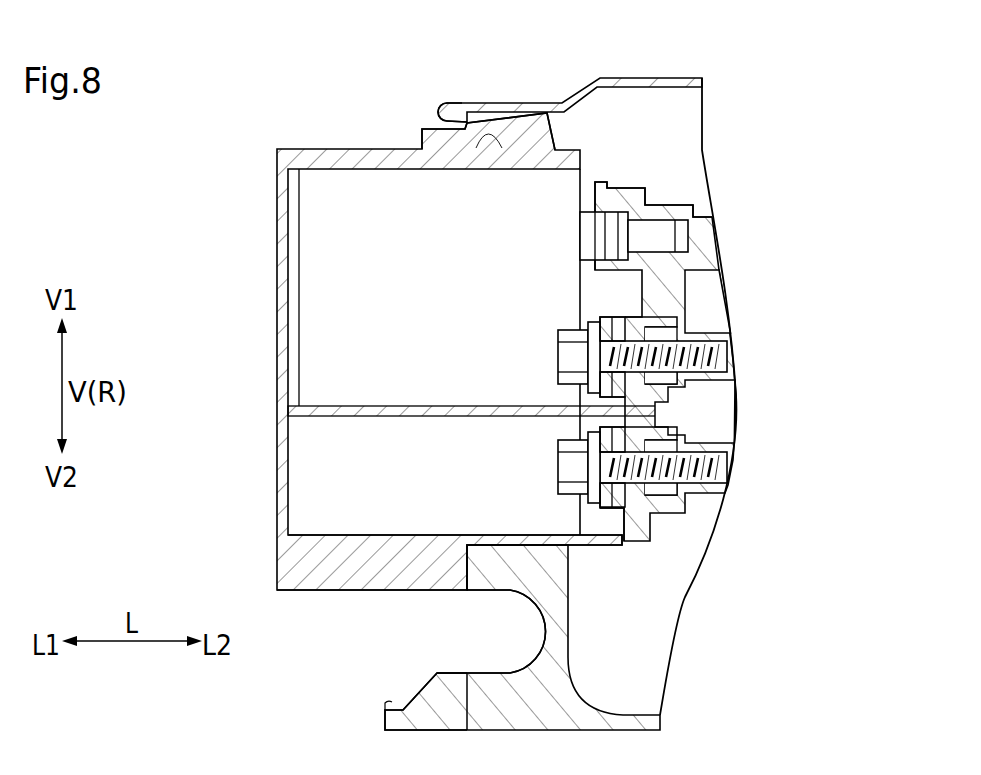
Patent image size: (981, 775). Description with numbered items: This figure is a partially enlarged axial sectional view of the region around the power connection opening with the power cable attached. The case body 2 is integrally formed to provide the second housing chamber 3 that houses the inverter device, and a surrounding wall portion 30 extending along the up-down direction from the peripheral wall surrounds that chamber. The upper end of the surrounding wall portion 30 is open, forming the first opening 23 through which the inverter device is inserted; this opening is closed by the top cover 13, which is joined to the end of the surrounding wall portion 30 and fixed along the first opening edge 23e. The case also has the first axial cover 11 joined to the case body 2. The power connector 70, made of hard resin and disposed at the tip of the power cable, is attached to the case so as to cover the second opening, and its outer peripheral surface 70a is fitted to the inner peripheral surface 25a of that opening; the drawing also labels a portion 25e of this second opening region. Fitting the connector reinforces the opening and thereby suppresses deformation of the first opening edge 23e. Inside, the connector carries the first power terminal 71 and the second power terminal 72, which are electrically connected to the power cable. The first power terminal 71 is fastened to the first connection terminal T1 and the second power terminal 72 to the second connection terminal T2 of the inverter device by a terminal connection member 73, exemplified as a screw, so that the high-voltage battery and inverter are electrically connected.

The power connector 70 is at (225, 170).
The outer peripheral surface 70a is at (489, 136).
The first opening 23 is at (612, 125).
The first opening edge 23e is at (518, 110).
The top cover 13 is at (703, 80).
The inner peripheral surface 25a is at (563, 185).
The first power terminal 71 is at (602, 317).
The terminal connection member 73 is at (560, 350).
The second power terminal 72 is at (608, 510).
The first connection terminal T1 is at (622, 322).
The second connection terminal T2 is at (620, 523).
The second housing chamber 3 is at (687, 523).
The bottom wall of casing (25) 25e is at (487, 547).
The surrounding wall portion 30 is at (552, 616).
The first axial cover 11 is at (432, 683).
The case body 2 is at (662, 717).